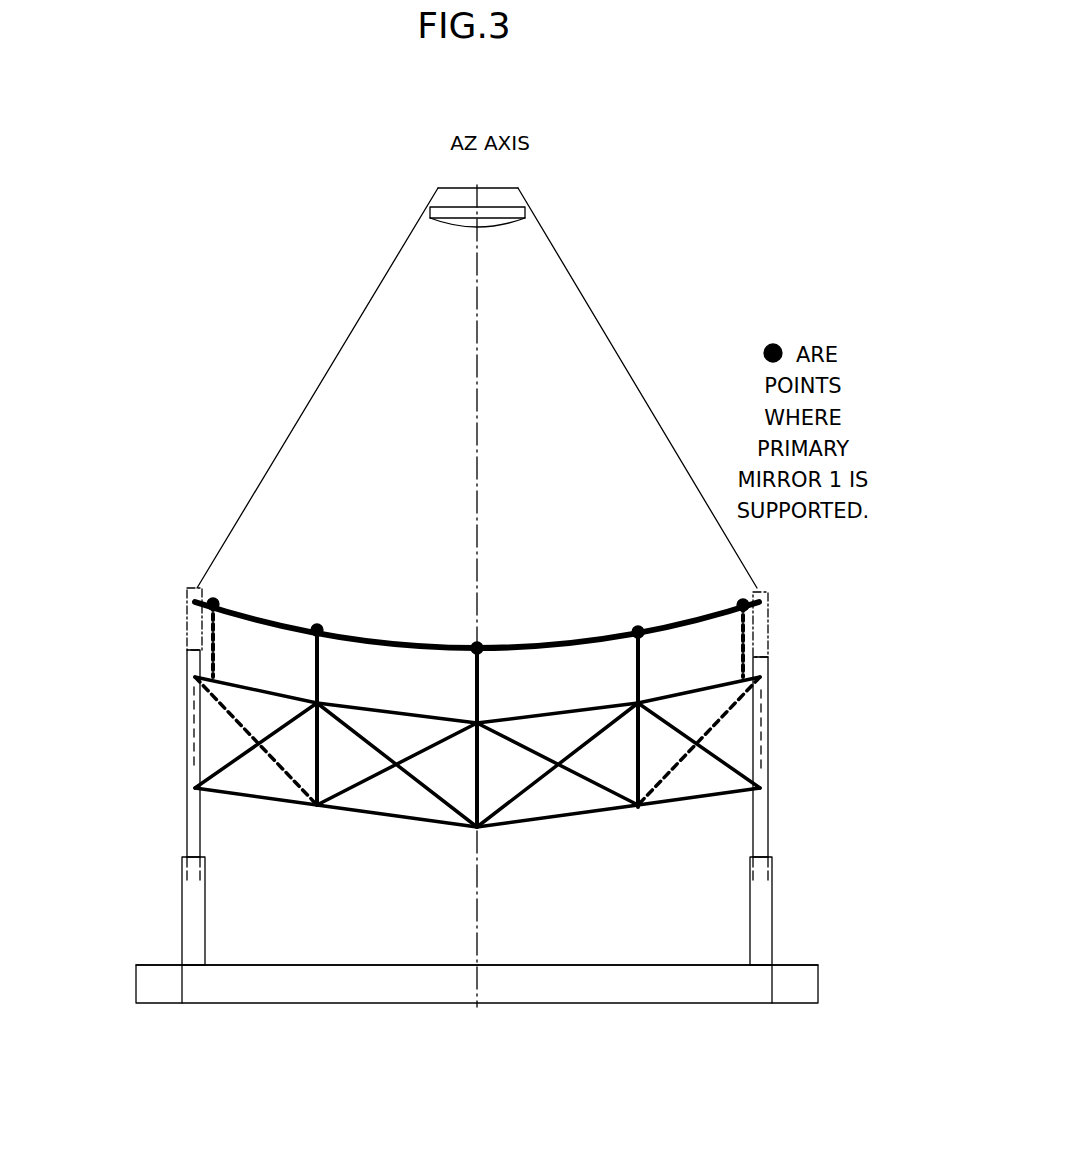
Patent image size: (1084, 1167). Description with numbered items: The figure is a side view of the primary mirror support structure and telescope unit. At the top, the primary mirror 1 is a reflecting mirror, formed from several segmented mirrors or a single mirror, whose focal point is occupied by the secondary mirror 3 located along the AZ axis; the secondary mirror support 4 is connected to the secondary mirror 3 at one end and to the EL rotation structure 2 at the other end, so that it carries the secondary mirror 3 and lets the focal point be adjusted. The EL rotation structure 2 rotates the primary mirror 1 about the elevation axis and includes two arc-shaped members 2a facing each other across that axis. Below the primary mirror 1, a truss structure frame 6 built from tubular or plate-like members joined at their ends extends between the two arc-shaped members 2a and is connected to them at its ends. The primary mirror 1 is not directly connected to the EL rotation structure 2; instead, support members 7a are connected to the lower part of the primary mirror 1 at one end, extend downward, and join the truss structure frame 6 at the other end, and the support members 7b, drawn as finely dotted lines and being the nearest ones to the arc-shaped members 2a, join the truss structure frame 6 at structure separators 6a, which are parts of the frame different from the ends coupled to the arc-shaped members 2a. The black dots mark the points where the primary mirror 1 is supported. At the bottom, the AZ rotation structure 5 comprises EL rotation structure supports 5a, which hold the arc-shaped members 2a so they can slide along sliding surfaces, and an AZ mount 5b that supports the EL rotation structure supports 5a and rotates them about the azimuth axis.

The primary mirror 1 is at (392, 630).
The EL rotation structure 2 is at (772, 718).
The arc-shaped members 2a is at (193, 838).
The secondary mirror 3 is at (455, 212).
The secondary mirror support 4 is at (349, 333).
The AZ rotation structure 5 is at (632, 1010).
The EL rotation structure supports 5a is at (193, 950).
The AZ mount 5b is at (527, 985).
The truss structure frame 6 is at (427, 795).
The structure separator 6a is at (316, 806).
The support members 7a is at (316, 660).
The support members 7b is at (208, 658).